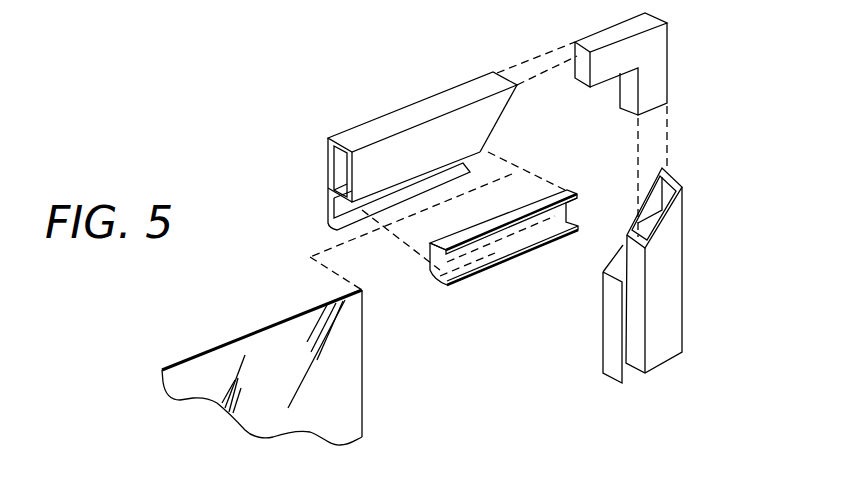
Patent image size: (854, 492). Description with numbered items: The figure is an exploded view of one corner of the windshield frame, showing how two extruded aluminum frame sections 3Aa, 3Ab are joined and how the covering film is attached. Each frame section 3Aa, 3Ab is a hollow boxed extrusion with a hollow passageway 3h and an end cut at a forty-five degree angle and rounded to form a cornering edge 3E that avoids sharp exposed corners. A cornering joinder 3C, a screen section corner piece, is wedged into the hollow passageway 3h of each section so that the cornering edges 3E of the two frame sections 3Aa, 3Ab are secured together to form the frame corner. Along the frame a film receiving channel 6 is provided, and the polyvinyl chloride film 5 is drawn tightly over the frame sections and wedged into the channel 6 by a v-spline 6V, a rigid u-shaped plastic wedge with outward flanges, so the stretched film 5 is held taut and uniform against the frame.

The frame section 3Aa is at (437, 107).
The frame section 3Ab is at (685, 277).
The cornering joinder 3C is at (672, 60).
The cornering edge 3E is at (502, 117).
The hollow passageway 3h is at (338, 169).
The film receiving channel 6 is at (326, 221).
The v-spline 6V is at (495, 265).
The film 5 is at (343, 375).